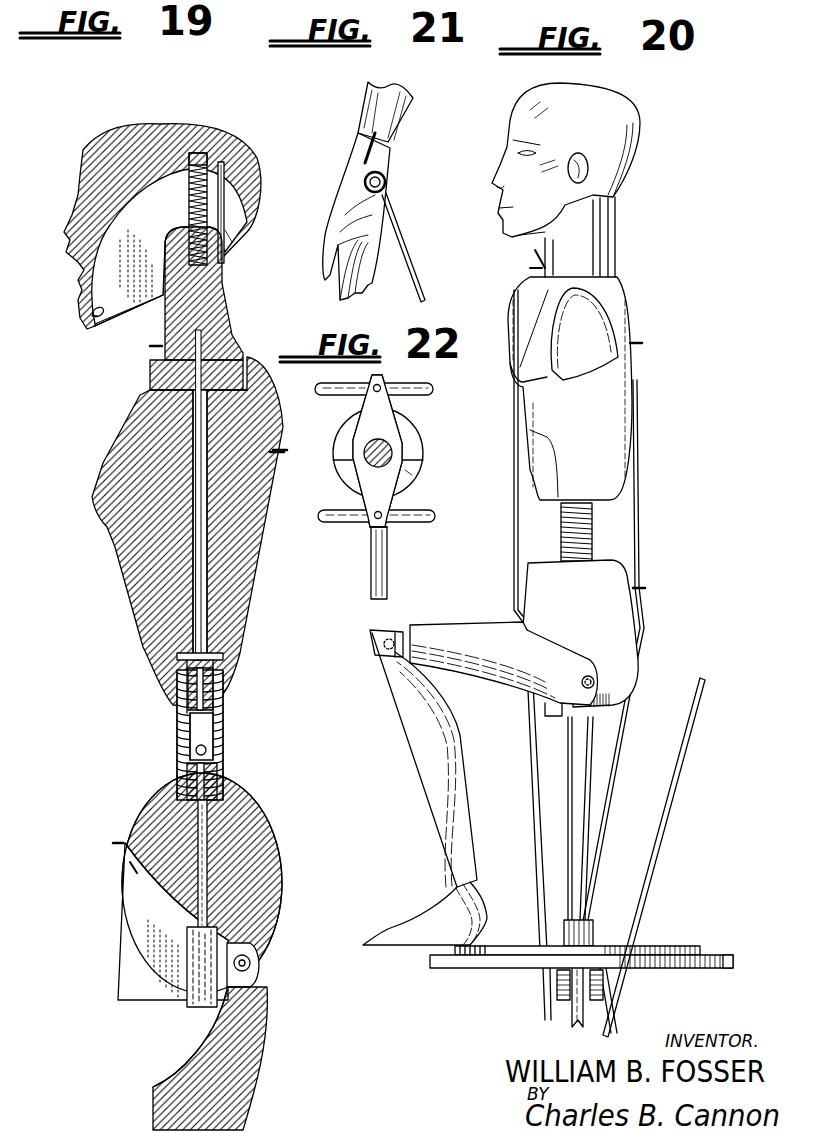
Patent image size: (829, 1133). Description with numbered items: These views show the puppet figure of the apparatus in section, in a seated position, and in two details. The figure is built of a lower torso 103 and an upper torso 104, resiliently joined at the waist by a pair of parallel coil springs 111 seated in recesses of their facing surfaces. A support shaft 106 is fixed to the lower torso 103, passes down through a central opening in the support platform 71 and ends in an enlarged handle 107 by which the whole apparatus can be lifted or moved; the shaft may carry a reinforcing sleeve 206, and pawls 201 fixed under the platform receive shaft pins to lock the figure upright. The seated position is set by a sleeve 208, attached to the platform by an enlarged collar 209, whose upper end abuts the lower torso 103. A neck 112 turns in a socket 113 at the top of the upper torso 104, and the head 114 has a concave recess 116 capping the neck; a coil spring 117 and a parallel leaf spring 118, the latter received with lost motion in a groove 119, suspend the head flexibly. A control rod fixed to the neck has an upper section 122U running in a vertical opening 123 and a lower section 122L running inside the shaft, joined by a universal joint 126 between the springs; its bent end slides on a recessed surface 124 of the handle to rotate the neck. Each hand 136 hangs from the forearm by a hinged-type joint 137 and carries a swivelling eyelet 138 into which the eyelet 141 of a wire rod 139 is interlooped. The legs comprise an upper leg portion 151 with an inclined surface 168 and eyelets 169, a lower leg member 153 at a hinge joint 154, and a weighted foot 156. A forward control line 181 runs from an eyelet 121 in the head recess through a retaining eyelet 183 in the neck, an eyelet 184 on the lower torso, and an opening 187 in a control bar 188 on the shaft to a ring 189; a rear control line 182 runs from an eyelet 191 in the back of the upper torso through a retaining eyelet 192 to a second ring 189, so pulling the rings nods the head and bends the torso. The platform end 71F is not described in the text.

In FIG. 20, the support platform 71 is at (678, 941).
In FIG. 20, the base plate end 71F is at (728, 956).
In FIG. 19, the lower torso 103 is at (248, 810).
In FIG. 20, the lower torso 103 is at (638, 637).
In FIG. 19, the upper torso 104 is at (125, 438).
In FIG. 20, the upper torso 104 is at (640, 318).
In FIG. 19, the support shaft 106 is at (185, 988).
In FIG. 22, the support shaft 106 is at (365, 445).
In FIG. 22, the handle 107 is at (413, 440).
In FIG. 20, the coil springs 111 is at (570, 536).
In FIG. 19, the neck 112 is at (220, 322).
In FIG. 20, the neck 112 is at (612, 226).
In FIG. 19, the socket 113 is at (240, 358).
In FIG. 19, the head 114 is at (158, 128).
In FIG. 20, the head 114 is at (630, 102).
In FIG. 19, the concave recess 116 is at (172, 286).
In FIG. 19, the coil spring 117 is at (190, 214).
In FIG. 19, the leaf spring 118 is at (224, 240).
In FIG. 19, the groove 119 is at (226, 174).
In FIG. 19, the eyelet 121 is at (98, 320).
In FIG. 19, the upper section of control rod 122U is at (203, 487).
In FIG. 19, the lower section of control rod 122L is at (180, 926).
In FIG. 22, the lower section of control rod 122L is at (372, 463).
In FIG. 19, the vertically extending opening 123 is at (200, 458).
In FIG. 22, the recessed surface 124 is at (408, 472).
In FIG. 19, the universal joint 126 is at (233, 750).
In FIG. 21, the hand 136 is at (350, 186).
In FIG. 21, the hinged-type joint 137 is at (346, 146).
In FIG. 21, the eyelet 138 is at (384, 174).
In FIG. 21, the wire rod 139 is at (412, 272).
In FIG. 20, the wire rod 139 is at (684, 790).
In FIG. 21, the eyelet 141 is at (386, 186).
In FIG. 19, the upper leg portion 151 is at (248, 1065).
In FIG. 20, the upper leg portion 151 is at (472, 680).
In FIG. 20, the lower leg member 153 is at (428, 784).
In FIG. 20, the hinge joint 154 is at (386, 623).
In FIG. 20, the foot 156 is at (412, 922).
In FIG. 19, the downwardly inclined surface 168 is at (195, 1056).
In FIG. 19, the eyelets 169 is at (124, 876).
In FIG. 20, the forward control line 181 is at (514, 518).
In FIG. 20, the rear control line 182 is at (638, 508).
In FIG. 19, the retaining eyelet 183 is at (150, 350).
In FIG. 20, the retaining eyelet 183 is at (531, 268).
In FIG. 19, the eyelet 184 is at (120, 840).
In FIG. 22, the opening 187 is at (383, 381).
In FIG. 22, the control bar 188 is at (386, 403).
In FIG. 22, the ring 189 is at (426, 384).
In FIG. 19, the eyelet 191 is at (284, 454).
In FIG. 22, the eyelet 191 is at (287, 452).
In FIG. 20, the eyelet 191 is at (643, 347).
In FIG. 20, the retaining eyelet 192 is at (645, 590).
In FIG. 20, the pawls 201 is at (556, 990).
In FIG. 20, the reinforcing sleeve 206 is at (574, 1023).
In FIG. 20, the sleeve 208 is at (583, 752).
In FIG. 20, the enlarged collar 209 is at (594, 926).